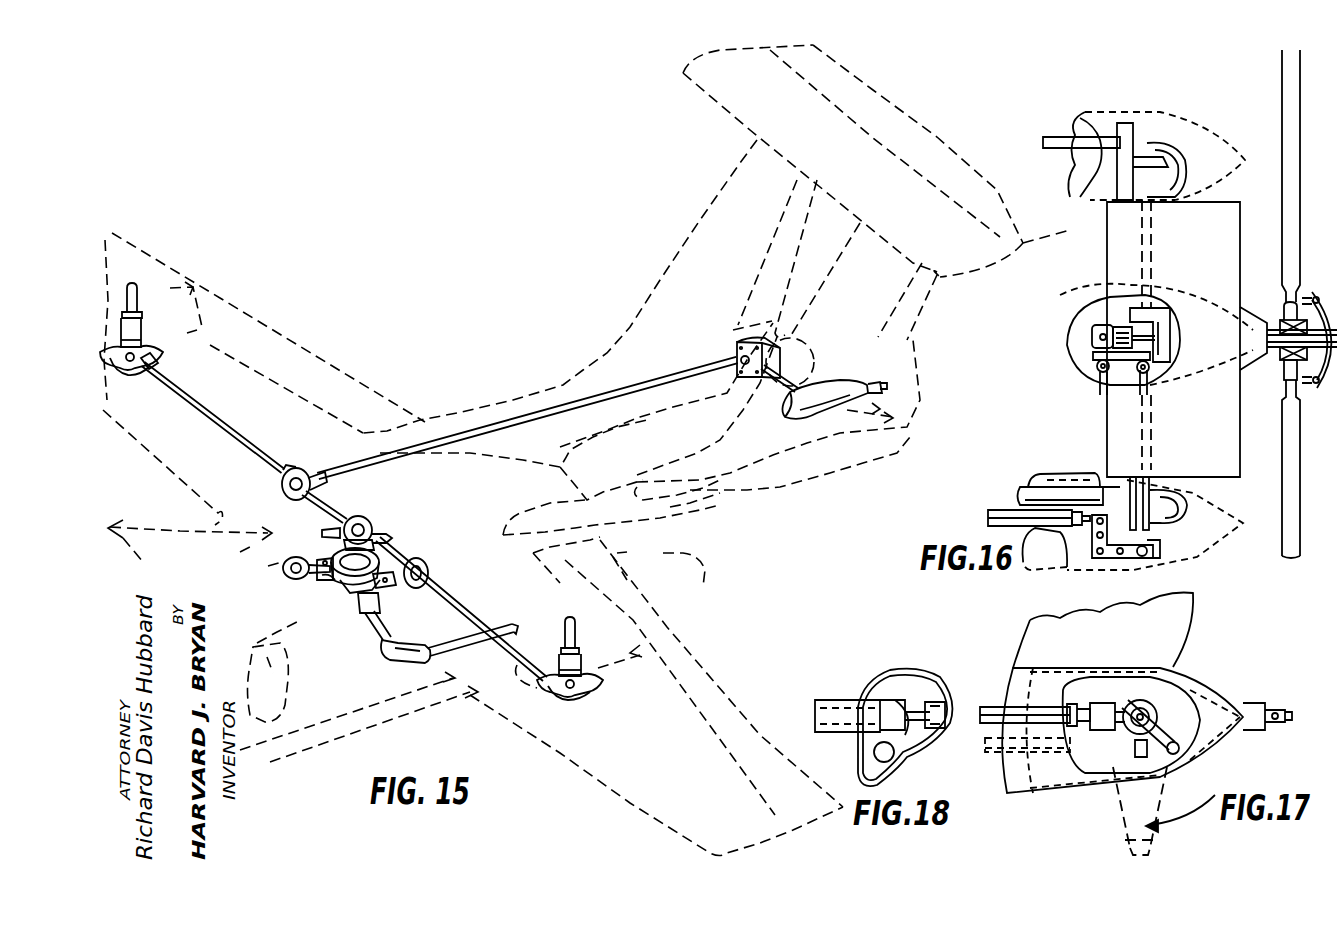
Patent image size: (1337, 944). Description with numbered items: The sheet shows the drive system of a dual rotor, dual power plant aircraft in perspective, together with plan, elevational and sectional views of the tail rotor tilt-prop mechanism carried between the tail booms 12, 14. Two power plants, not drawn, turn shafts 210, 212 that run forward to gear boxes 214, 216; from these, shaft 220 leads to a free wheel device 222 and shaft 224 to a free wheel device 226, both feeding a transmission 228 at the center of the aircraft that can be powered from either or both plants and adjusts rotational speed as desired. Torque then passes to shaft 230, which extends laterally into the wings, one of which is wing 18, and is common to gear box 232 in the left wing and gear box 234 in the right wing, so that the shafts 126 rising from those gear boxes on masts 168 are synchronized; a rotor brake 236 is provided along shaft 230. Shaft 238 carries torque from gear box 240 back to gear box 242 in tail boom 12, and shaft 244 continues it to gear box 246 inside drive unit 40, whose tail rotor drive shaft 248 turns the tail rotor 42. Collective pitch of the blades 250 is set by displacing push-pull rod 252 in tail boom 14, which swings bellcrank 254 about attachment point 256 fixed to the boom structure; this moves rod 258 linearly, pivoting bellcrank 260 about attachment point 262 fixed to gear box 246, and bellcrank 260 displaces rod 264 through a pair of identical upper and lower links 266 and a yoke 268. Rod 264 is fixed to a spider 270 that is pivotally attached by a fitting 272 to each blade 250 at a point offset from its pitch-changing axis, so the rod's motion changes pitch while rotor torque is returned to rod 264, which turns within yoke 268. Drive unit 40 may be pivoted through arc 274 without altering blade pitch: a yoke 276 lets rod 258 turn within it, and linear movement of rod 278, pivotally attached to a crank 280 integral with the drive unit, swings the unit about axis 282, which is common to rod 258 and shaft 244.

In FIG. 16, the tail boom 12 is at (1100, 112).
In FIG. 16, the tail boom 14 is at (1050, 483).
In FIG. 16, the wing 18 is at (1100, 432).
In FIG. 15, the drive unit 40 is at (790, 410).
In FIG. 16, the drive unit 40 is at (1076, 340).
In FIG. 17, the drive unit 40 is at (1252, 708).
In FIG. 18, the drive unit 40 is at (836, 733).
In FIG. 16, the tail rotor 42 is at (1285, 312).
In FIG. 15, the shaft 126 is at (137, 300).
In FIG. 15, the mast 168 is at (139, 330).
In FIG. 15, the shaft 210 is at (497, 622).
In FIG. 15, the shaft 212 is at (386, 535).
In FIG. 15, the gear box 214 is at (400, 662).
In FIG. 15, the gear box 216 is at (294, 560).
In FIG. 15, the shaft 220 is at (378, 627).
In FIG. 15, the free wheel device 222 is at (357, 596).
In FIG. 15, the shaft 224 is at (318, 585).
In FIG. 15, the free wheel device 226 is at (322, 583).
In FIG. 15, the transmission 228 is at (376, 569).
In FIG. 15, the shaft 230 is at (204, 410).
In FIG. 15, the gear box 232 is at (578, 692).
In FIG. 15, the gear box 234 is at (131, 378).
In FIG. 15, the rotor brake 236 is at (430, 573).
In FIG. 15, the shaft 238 is at (645, 383).
In FIG. 16, the shaft 238 is at (1055, 139).
In FIG. 15, the gear box 240 is at (282, 487).
In FIG. 15, the gear box 242 is at (740, 350).
In FIG. 16, the gear box 242 is at (1078, 160).
In FIG. 15, the shaft 244 is at (790, 378).
In FIG. 16, the shaft 244 is at (1152, 268).
In FIG. 16, the gear box 246 is at (1130, 312).
In FIG. 15, the tail rotor drive shaft 248 is at (880, 389).
In FIG. 16, the tail rotor drive shaft 248 is at (1272, 358).
In FIG. 17, the tail rotor drive shaft 248 is at (1276, 712).
In FIG. 16, the rotor blade 250 is at (1283, 560).
In FIG. 16, the push-pull rod 252 is at (992, 513).
In FIG. 17, the push-pull rod 252 is at (991, 700).
In FIG. 16, the bellcrank 254 is at (1091, 521).
In FIG. 18, the bellcrank 254 is at (936, 702).
In FIG. 16, the attachment point 256 is at (1085, 575).
In FIG. 16, the rod 258 is at (1140, 415).
In FIG. 18, the rod 258 is at (818, 702).
In FIG. 16, the bellcrank 260 is at (1097, 362).
In FIG. 16, the attachment point 262 is at (1100, 371).
In FIG. 15, the rod 264 is at (888, 384).
In FIG. 16, the rod 264 is at (1158, 345).
In FIG. 17, the rod 264 is at (1286, 723).
In FIG. 16, the link 266 is at (1093, 333).
In FIG. 16, the yoke 268 is at (1118, 327).
In FIG. 16, the spider 270 is at (1326, 388).
In FIG. 16, the fitting 272 is at (1308, 298).
In FIG. 17, the arc 274 is at (1248, 728).
In FIG. 16, the yoke 276 is at (1160, 560).
In FIG. 17, the yoke 276 is at (1170, 690).
In FIG. 18, the yoke 276 is at (915, 720).
In FIG. 16, the rod 278 is at (1020, 492).
In FIG. 17, the rod 278 is at (995, 748).
In FIG. 18, the rod 278 is at (892, 760).
In FIG. 16, the crank 280 is at (1162, 518).
In FIG. 17, the crank 280 is at (1225, 750).
In FIG. 17, the axis 282 is at (1118, 705).